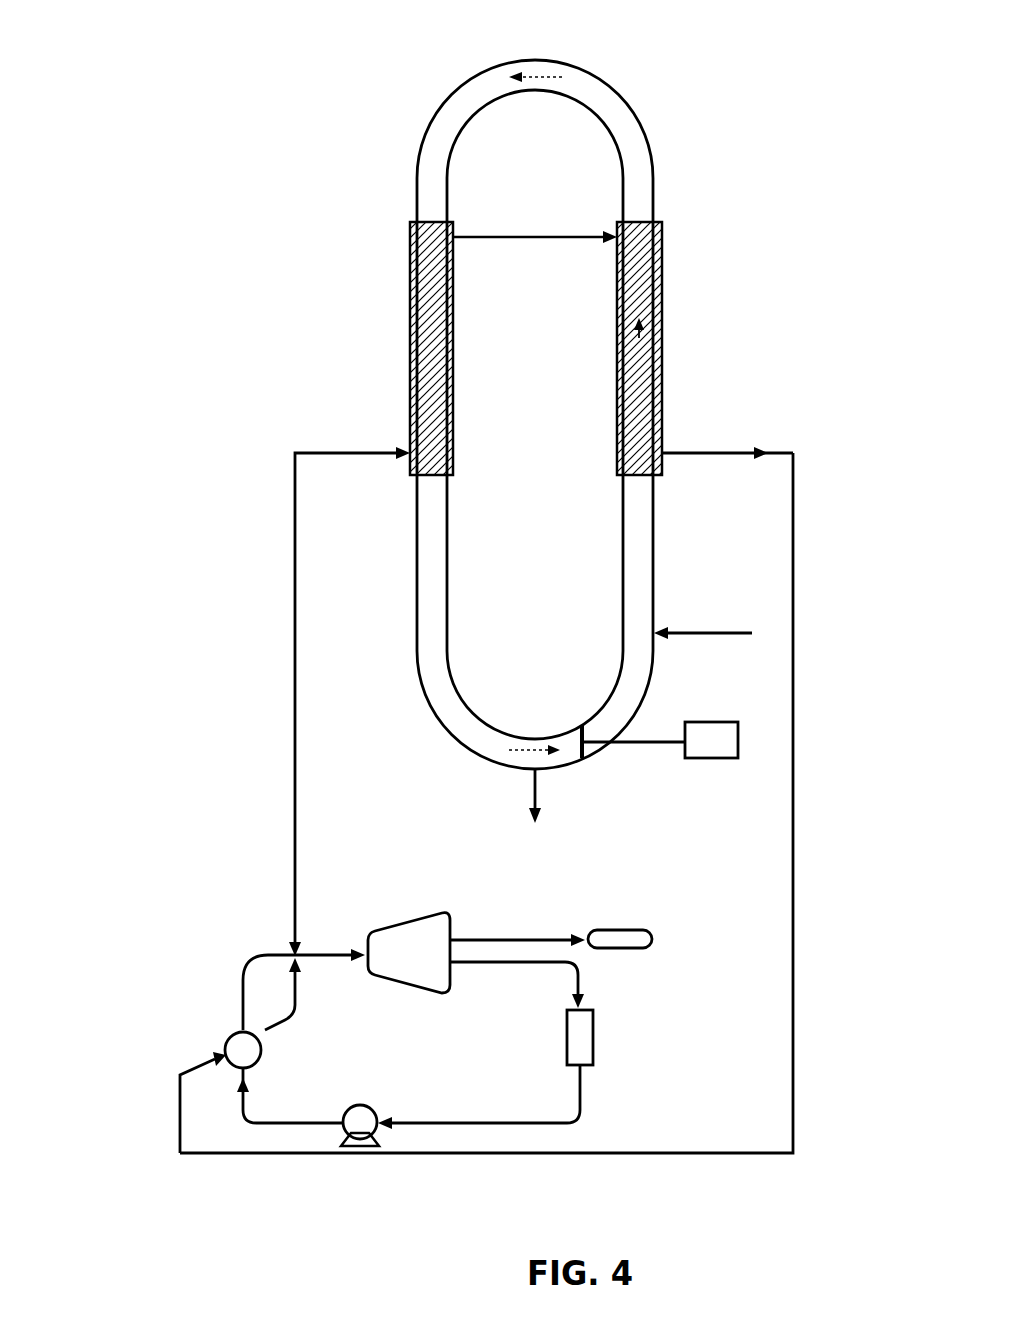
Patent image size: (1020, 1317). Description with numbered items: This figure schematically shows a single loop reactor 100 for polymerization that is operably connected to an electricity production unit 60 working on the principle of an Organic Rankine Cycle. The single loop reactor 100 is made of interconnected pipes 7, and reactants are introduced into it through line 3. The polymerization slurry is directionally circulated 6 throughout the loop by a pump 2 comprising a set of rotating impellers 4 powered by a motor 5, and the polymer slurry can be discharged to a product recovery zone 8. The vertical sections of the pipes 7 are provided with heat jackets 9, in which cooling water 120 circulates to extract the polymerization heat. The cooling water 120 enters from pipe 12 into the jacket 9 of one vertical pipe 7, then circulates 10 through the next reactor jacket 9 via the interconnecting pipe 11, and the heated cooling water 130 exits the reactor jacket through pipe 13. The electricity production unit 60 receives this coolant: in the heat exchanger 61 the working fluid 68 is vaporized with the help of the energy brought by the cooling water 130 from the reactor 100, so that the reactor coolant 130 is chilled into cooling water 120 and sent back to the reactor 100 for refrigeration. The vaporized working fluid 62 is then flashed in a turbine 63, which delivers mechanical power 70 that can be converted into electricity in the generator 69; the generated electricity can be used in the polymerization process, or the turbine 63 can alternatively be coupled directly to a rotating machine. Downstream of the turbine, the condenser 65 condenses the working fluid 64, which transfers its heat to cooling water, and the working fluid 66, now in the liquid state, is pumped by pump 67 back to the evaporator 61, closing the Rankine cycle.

The pump 2 is at (650, 744).
The line 3 is at (720, 633).
The rotating impellers 4 is at (582, 760).
The motor 5 is at (720, 740).
The directional circulation 6 is at (528, 77).
The interconnected pipes 7 is at (420, 535).
The product recovery zone 8 is at (530, 800).
The heat jackets 9 is at (410, 293).
The circulation of cooling water 10 is at (636, 343).
The interconnecting pipe 11 is at (505, 236).
The pipe 12 is at (360, 451).
The pipe 13 is at (668, 450).
The electricity production unit 60 is at (490, 1155).
The heat exchanger 61 is at (237, 1050).
The working fluid 62 is at (318, 950).
The turbine 63 is at (390, 937).
The working fluid 64 is at (583, 975).
The condenser 65 is at (585, 1040).
The working fluid 66 is at (583, 1085).
The pump 67 is at (365, 1115).
The working fluid 68 is at (265, 1117).
The generator 69 is at (628, 940).
The mechanical power 70 is at (515, 935).
The single loop reactor 100 is at (712, 152).
The cooling water 120 is at (285, 1015).
The cooling water 130 is at (175, 1135).